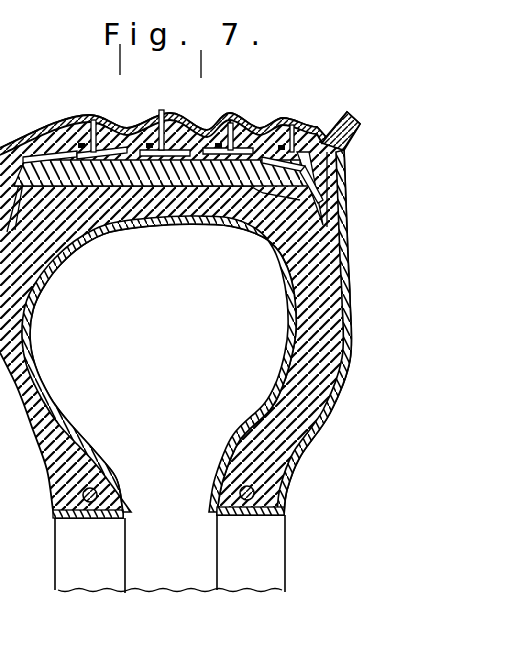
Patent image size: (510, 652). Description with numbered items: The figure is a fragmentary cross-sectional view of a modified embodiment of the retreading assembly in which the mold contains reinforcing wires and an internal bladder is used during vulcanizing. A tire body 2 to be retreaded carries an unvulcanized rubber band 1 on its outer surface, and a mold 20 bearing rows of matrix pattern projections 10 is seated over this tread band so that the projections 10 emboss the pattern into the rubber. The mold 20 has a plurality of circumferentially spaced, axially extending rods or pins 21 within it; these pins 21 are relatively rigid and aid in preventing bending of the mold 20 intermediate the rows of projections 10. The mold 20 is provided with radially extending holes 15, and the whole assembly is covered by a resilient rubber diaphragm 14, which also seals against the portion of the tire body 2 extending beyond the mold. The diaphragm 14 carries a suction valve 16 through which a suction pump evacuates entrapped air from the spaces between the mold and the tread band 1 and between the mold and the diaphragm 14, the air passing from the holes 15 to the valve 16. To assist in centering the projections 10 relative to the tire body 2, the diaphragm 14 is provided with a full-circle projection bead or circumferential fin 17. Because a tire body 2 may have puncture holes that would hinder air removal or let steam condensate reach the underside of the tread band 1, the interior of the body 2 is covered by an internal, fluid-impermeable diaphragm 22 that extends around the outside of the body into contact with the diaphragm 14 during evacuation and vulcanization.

The unvulcanized rubber band 1 is at (188, 225).
The tire body 2 is at (313, 297).
The matrix pattern projections 10 is at (145, 222).
The rubber diaphragm 14 is at (348, 258).
The radially extending holes 15 is at (30, 130).
The suction valve 16 is at (352, 114).
The circumferential fin 17 is at (157, 122).
The mold 20 is at (271, 120).
The pins 21 is at (137, 116).
The internal diaphragm 22 is at (297, 465).